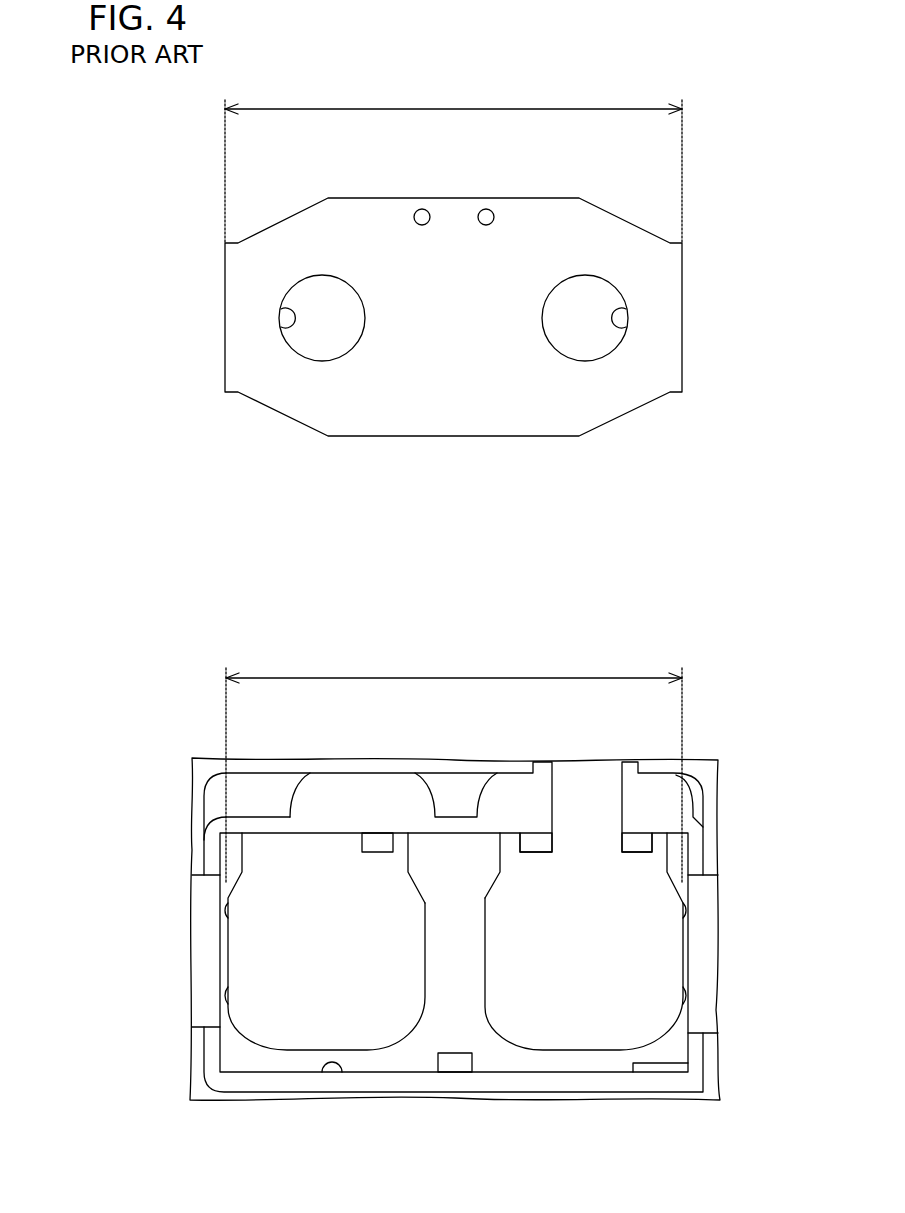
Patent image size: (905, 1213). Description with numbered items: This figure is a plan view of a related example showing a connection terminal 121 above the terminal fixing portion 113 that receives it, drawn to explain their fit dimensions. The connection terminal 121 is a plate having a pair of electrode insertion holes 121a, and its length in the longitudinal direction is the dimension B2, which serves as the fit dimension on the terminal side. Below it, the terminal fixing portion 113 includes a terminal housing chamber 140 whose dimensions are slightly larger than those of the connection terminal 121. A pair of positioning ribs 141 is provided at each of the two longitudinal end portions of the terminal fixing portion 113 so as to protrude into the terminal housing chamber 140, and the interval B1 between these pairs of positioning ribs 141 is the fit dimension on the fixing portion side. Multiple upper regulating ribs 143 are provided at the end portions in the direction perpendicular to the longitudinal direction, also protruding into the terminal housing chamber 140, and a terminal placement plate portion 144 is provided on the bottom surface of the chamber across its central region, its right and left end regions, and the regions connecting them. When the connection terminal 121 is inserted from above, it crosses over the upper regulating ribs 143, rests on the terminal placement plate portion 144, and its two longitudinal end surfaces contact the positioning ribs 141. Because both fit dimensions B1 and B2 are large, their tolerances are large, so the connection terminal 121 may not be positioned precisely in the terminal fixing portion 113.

The connection terminal 121 is at (453, 393).
The electrode insertion hole 121a is at (288, 328).
The terminal fixing portion 113 is at (588, 1082).
The terminal housing chamber 140 is at (340, 1073).
The positioning rib 141 is at (224, 996).
The upper regulating rib 143 is at (376, 845).
The terminal placement plate portion 144 is at (455, 948).
The interval between the pairs of positioning ribs B1 is at (462, 676).
The longitudinal dimension of the connection terminal B2 is at (462, 108).